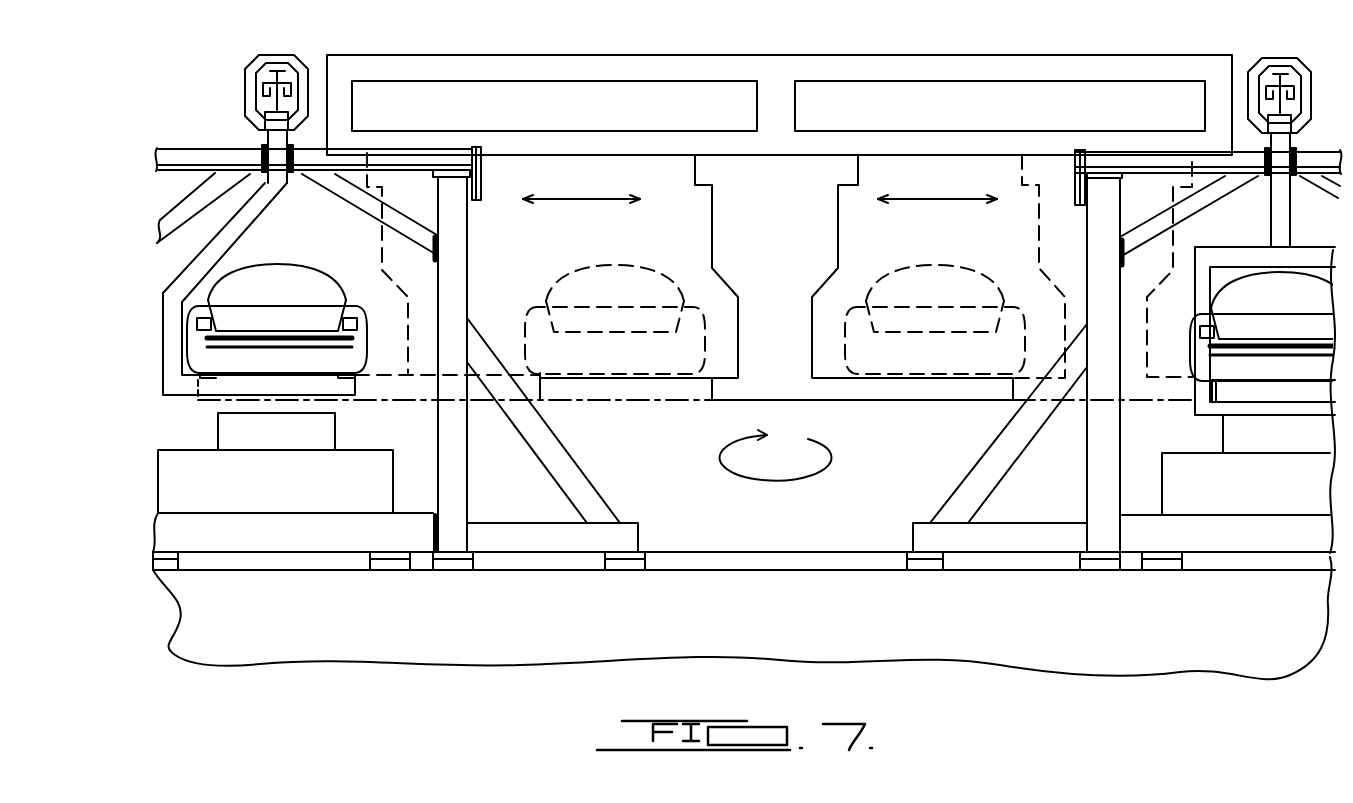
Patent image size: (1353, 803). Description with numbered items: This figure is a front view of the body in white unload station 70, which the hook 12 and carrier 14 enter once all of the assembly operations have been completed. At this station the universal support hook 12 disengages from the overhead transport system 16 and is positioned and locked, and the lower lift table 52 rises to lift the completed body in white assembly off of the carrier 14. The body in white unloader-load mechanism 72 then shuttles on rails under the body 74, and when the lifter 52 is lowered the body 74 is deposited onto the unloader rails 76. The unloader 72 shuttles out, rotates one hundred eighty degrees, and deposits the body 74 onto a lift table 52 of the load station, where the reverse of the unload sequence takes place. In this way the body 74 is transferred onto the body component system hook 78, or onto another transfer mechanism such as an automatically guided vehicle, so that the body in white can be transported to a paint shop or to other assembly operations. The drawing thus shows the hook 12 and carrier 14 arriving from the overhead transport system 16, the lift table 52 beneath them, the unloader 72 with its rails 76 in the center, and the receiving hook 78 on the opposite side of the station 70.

The universal support hook 12 is at (257, 217).
The carrier 14 is at (218, 383).
The overhead transport system 16 is at (270, 56).
The lower lift table 52 is at (375, 463).
The body in white unload station 70 is at (1012, 583).
The body in white unloader-load mechanism 72 is at (781, 207).
The body 74 is at (343, 289).
The unloader rails 76 is at (913, 400).
The body component system hook 78 is at (1280, 219).